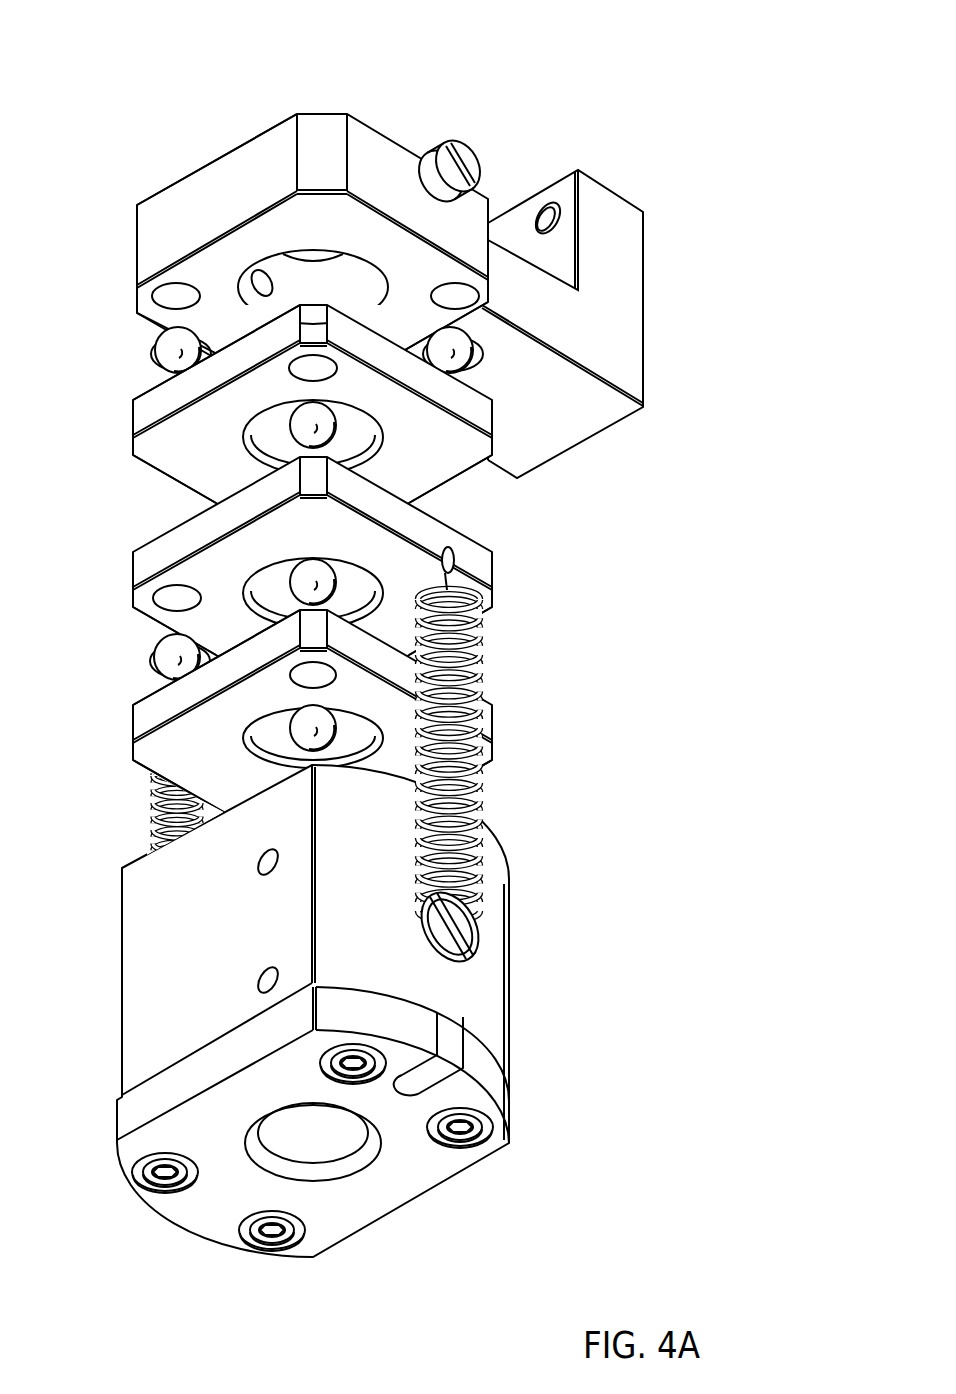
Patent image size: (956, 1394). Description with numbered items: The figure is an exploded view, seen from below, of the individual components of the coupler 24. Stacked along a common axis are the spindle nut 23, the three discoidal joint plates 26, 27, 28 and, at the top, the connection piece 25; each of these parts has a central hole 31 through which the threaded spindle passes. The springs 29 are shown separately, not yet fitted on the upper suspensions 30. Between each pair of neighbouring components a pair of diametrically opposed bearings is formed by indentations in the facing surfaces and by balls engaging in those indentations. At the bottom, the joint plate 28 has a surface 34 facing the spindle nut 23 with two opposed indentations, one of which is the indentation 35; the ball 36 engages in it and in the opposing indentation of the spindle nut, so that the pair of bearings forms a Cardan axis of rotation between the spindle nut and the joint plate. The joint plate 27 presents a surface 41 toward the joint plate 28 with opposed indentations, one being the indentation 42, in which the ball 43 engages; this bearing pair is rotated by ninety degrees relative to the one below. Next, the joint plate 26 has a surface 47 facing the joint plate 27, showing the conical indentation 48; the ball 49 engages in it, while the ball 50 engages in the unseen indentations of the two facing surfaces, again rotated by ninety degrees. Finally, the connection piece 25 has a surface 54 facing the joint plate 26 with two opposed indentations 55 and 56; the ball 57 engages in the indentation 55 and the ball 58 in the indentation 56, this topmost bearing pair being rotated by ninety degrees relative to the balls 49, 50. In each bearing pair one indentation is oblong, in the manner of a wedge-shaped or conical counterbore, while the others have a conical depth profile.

The spindle nut 23 is at (130, 990).
The coupler 24 is at (520, 108).
The connection piece 25 is at (238, 165).
The joint plate 26 is at (160, 425).
The joint plate 27 is at (160, 570).
The joint plate 28 is at (160, 727).
The springs 29 is at (165, 822).
The upper suspensions 30 is at (460, 148).
The central hole 31 is at (305, 268).
The surface 34 is at (160, 770).
The indentation 35 is at (305, 680).
The ball 36 is at (322, 755).
The surface 41 is at (440, 547).
The indentation 42 is at (177, 598).
The ball 43 is at (175, 657).
The surface 47 is at (175, 478).
The indentation 48 is at (328, 372).
The ball 49 is at (295, 428).
The ball 50 is at (318, 578).
The surface 54 is at (200, 268).
The indentation 55 is at (176, 296).
The indentation 56 is at (455, 296).
The ball 57 is at (175, 350).
The ball 58 is at (468, 365).